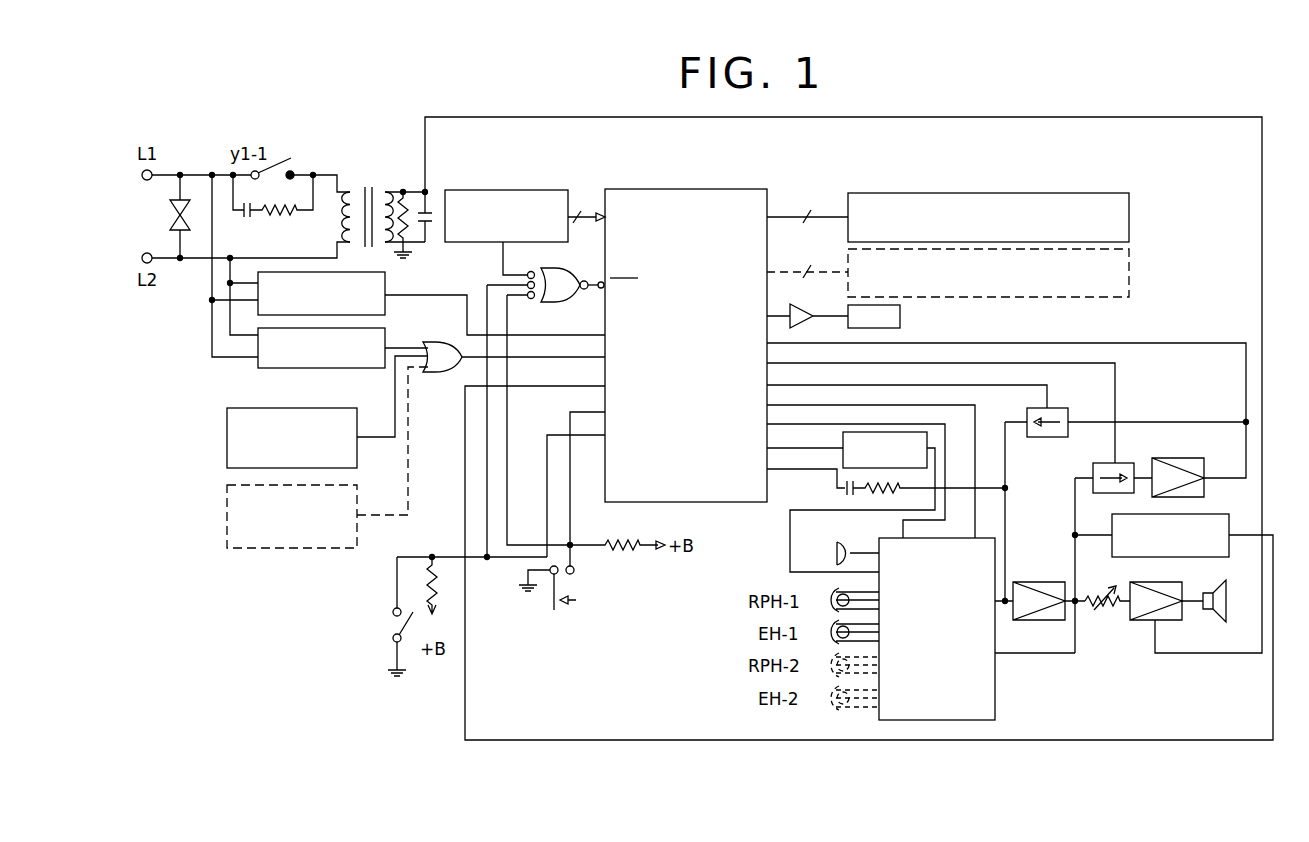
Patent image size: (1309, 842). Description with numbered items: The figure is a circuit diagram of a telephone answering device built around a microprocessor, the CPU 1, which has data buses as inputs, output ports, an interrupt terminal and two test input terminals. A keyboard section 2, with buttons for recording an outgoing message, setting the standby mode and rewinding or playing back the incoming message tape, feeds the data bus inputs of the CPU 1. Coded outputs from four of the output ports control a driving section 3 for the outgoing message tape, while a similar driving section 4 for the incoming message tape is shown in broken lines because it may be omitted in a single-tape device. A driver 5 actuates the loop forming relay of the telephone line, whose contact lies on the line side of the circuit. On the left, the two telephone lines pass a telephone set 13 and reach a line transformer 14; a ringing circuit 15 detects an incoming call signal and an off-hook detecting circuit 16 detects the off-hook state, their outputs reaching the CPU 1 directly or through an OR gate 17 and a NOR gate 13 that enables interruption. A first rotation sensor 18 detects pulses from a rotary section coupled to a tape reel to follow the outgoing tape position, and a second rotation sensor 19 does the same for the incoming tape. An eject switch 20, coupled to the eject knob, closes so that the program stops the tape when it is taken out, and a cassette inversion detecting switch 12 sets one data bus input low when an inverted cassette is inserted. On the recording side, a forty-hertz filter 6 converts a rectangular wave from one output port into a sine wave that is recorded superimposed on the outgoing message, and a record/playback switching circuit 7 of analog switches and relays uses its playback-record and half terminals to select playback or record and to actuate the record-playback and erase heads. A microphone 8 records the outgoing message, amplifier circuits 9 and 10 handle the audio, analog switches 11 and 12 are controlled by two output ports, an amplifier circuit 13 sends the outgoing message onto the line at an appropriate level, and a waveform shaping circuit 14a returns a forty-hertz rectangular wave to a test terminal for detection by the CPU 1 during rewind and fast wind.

The microprocessor (CPU) 1 is at (675, 189).
The keyboard section 2 is at (500, 190).
The driving section 3 is at (995, 193).
The driving section 4 is at (1161, 283).
The driver 5 is at (812, 309).
The filter 6 is at (928, 440).
The record/playback switching circuit 7 is at (995, 701).
The microphone 8 is at (835, 553).
The amplifier circuit 9 is at (1044, 582).
The amplifier circuit 10 is at (1138, 622).
The analog switch 11 is at (1067, 408).
The analog switch / cassette inversion detecting switch 12 is at (560, 615).
The amplifier circuit / NOR gate / telephone set 13 is at (170, 215).
The line transformer 14 is at (387, 209).
The waveform shaping circuit 14a is at (1218, 515).
The ringing circuit 15 is at (385, 333).
The off-hook detecting circuit 16 is at (385, 283).
The OR gate 17 is at (438, 372).
The first rotation sensor 18 is at (227, 437).
The second rotation sensor 19 is at (227, 517).
The eject switch 20 is at (393, 628).